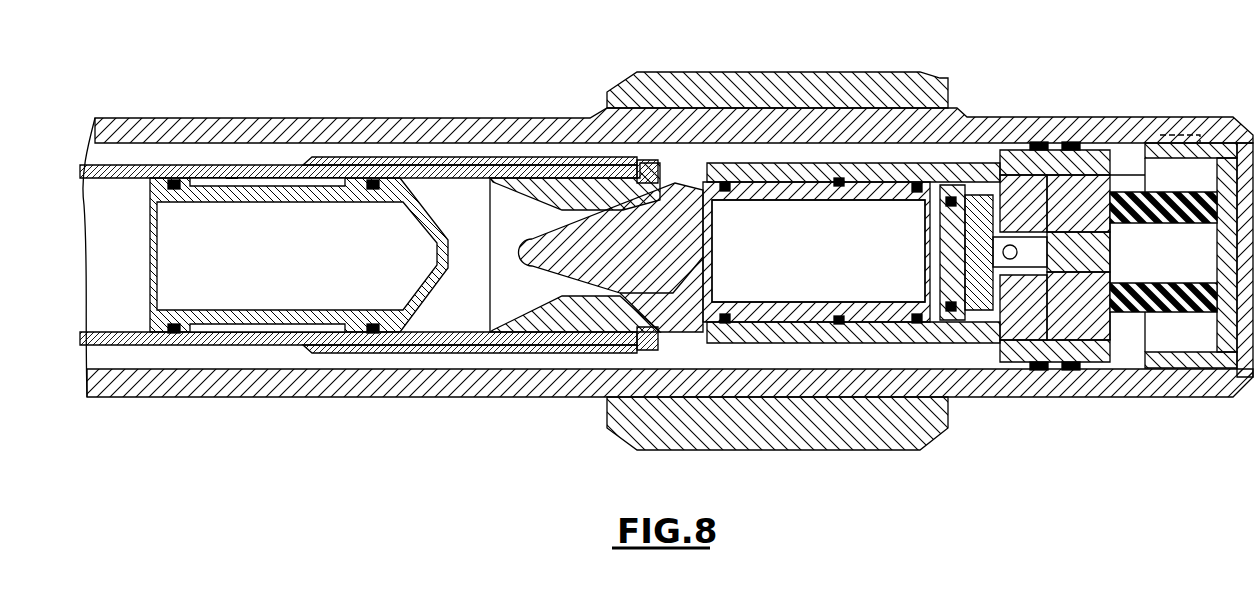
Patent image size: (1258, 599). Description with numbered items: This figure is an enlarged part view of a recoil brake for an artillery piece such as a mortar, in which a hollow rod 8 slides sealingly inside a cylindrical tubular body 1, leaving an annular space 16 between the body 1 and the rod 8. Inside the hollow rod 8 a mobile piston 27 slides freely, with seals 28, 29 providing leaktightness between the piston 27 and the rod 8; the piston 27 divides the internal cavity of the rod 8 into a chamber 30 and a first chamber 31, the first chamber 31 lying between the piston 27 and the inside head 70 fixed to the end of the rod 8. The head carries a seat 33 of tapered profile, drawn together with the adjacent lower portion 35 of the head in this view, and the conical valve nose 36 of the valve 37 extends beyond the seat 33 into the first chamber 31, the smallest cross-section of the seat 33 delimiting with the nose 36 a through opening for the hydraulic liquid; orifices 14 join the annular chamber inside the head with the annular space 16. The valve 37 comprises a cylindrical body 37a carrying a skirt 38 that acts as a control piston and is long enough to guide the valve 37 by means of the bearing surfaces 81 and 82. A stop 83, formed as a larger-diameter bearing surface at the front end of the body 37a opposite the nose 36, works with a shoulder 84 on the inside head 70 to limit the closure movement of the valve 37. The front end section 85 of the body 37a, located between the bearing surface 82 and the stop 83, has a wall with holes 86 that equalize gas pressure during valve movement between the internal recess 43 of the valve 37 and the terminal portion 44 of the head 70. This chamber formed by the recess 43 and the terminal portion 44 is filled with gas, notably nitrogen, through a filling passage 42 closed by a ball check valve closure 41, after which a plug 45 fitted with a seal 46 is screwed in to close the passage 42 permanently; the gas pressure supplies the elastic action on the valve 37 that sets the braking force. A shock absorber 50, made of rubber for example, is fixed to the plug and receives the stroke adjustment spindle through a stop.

The cylindrical tubular body 1 is at (320, 122).
The hollow rod 8 is at (205, 170).
The orifices 14 is at (677, 177).
The annular space 16 is at (712, 150).
The mobile piston 27 is at (232, 174).
The seal 28 is at (172, 182).
The seal 29 is at (372, 182).
The chamber 30 is at (113, 207).
The first chamber 31 is at (463, 207).
The seat 33 is at (512, 183).
The nozzle body lower part 35 is at (590, 212).
The valve nose 36 is at (563, 253).
The valve 37 is at (873, 170).
The cylindrical shaped body 37a is at (797, 205).
The skirt 38 is at (840, 181).
The ball check valve closure 41 is at (1017, 308).
The filling passage 42 is at (1062, 330).
The internal recess 43 is at (757, 230).
The terminal portion 44 is at (1040, 362).
The plug 45 is at (1105, 250).
The seal 46 is at (1095, 240).
The shock absorber 50 is at (1167, 197).
The inside head 70 is at (917, 188).
The bearing surface 81 is at (726, 185).
The bearing surface 82 is at (962, 200).
The stop 83 is at (995, 193).
The shoulder 84 is at (977, 190).
The front end section 85 is at (955, 205).
The holes 86 is at (953, 318).